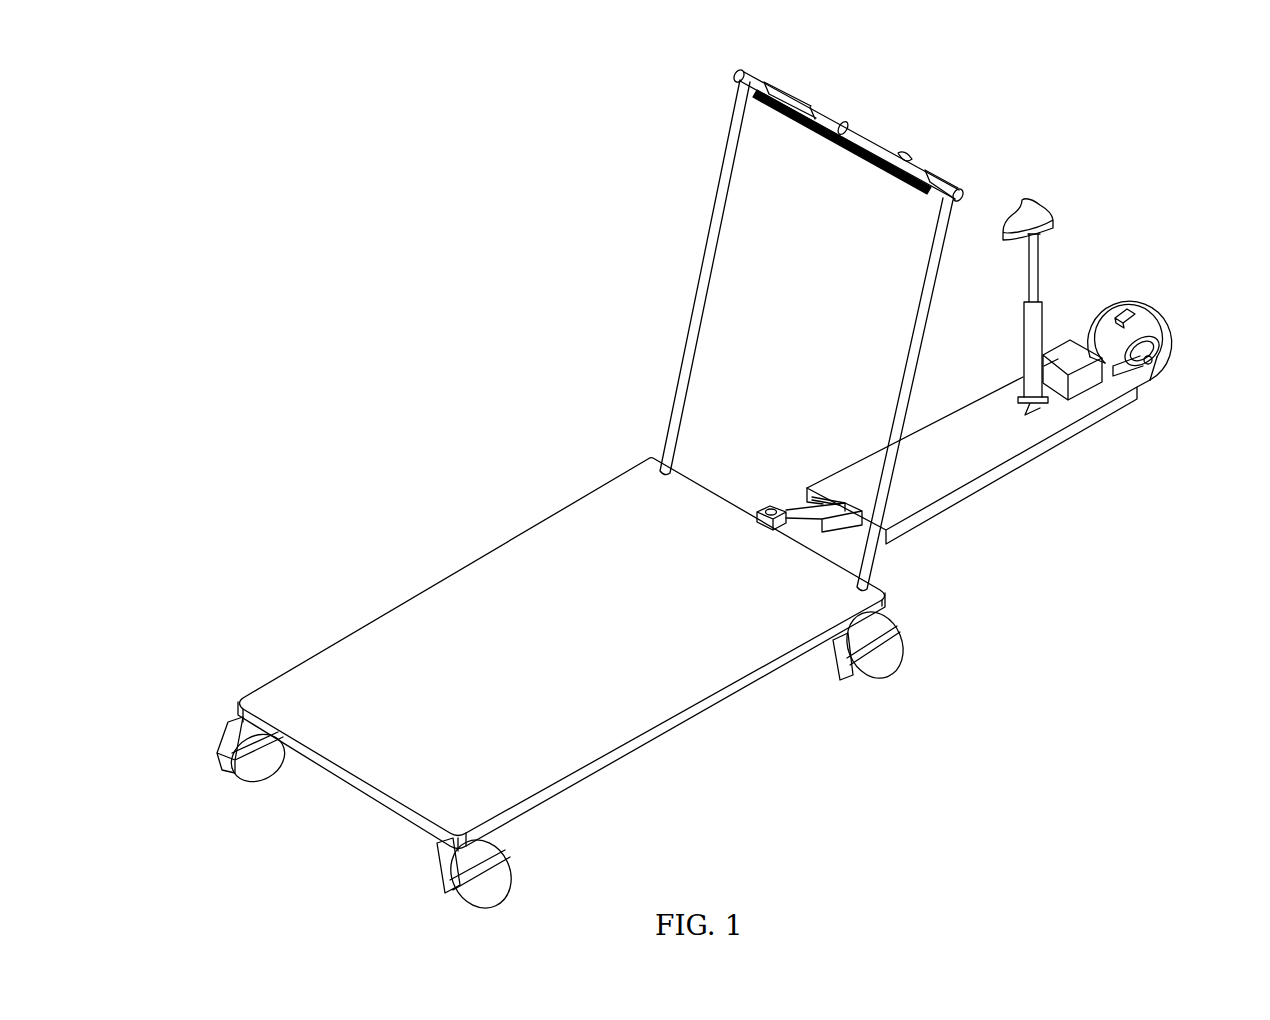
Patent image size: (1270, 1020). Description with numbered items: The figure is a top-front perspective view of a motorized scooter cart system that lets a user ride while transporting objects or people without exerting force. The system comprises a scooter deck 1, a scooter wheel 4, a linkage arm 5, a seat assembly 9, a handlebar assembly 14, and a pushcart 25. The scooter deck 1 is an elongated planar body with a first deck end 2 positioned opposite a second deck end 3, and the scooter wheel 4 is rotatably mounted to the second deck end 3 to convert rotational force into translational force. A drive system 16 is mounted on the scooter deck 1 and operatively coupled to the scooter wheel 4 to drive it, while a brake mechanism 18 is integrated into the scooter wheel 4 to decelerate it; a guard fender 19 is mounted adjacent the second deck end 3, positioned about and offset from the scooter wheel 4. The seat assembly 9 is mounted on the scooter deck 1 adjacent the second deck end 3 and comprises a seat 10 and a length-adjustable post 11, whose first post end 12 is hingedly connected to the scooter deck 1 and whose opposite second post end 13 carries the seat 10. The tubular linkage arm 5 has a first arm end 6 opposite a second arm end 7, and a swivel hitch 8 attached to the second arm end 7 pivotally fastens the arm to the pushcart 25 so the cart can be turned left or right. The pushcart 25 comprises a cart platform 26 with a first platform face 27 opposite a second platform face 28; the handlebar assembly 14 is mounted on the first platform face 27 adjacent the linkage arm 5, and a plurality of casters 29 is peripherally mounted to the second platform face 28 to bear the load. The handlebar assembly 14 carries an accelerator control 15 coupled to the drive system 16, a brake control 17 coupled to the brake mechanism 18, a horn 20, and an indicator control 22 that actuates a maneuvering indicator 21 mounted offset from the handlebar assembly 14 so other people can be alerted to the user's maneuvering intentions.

The scooter deck 1 is at (1000, 480).
The first deck end 2 is at (808, 490).
The second deck end 3 is at (1135, 392).
The scooter wheel 4 is at (1160, 330).
The linkage arm 5 is at (800, 518).
The first arm end 6 is at (842, 505).
The second arm end 7 is at (757, 520).
The swivel hitch 8 is at (770, 508).
The seat assembly 9 is at (1040, 163).
The seat 10 is at (1038, 205).
The length-adjustable post 11 is at (1025, 305).
The first post end 12 is at (1020, 400).
The second post end 13 is at (1040, 234).
The handlebar assembly 14 is at (893, 48).
The accelerator control 15 is at (760, 88).
The drive system 16 is at (1050, 355).
The brake control 17 is at (903, 157).
The brake mechanism 18 is at (1150, 352).
The guard fender 19 is at (1150, 310).
The horn 20 is at (842, 133).
The maneuvering indicator 21 is at (1125, 312).
The indicator control 22 is at (843, 128).
The pushcart 25 is at (345, 515).
The cart platform 26 is at (356, 785).
The first platform face 27 is at (500, 555).
The second platform face 28 is at (660, 745).
The casters 29 is at (228, 724).